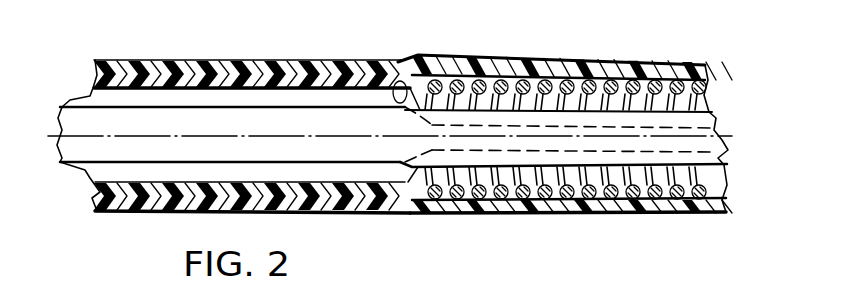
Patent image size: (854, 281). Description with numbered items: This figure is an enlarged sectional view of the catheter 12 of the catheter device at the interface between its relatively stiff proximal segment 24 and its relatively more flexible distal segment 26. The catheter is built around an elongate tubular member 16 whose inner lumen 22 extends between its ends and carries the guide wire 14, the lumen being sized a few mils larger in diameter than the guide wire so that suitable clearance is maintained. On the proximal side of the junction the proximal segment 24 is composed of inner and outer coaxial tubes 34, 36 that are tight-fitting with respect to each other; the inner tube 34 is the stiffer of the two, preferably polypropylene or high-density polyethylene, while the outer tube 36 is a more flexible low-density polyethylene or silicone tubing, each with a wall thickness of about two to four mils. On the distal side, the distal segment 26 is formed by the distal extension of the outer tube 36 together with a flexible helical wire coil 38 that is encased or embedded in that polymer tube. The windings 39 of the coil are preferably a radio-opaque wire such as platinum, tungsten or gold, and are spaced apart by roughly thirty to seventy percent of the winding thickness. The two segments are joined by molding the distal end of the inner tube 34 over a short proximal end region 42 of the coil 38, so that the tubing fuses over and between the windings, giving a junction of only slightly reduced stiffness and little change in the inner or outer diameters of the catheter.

The catheter 12 is at (587, 60).
The guide wire 14 is at (713, 160).
The elongate tubular member 16 is at (132, 60).
The inner lumen 22 is at (241, 99).
The proximal segment 24 is at (135, 215).
The distal segment 26 is at (693, 218).
The inner coaxial tube 34 is at (347, 200).
The outer coaxial tube 36 is at (505, 214).
The helical wire coil 38 is at (710, 84).
The coil windings 39 is at (650, 98).
The proximal end region of coil 42 is at (399, 81).